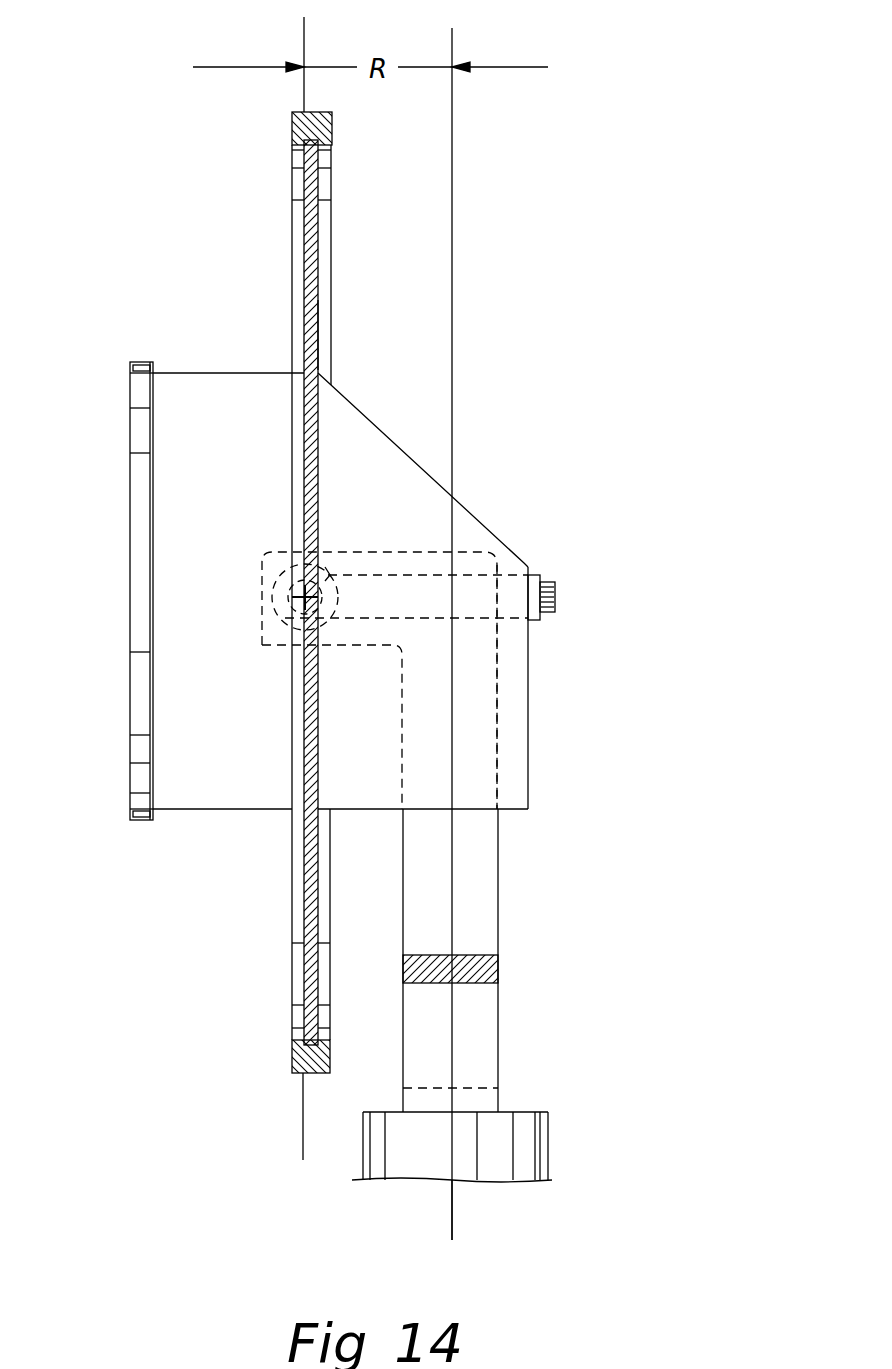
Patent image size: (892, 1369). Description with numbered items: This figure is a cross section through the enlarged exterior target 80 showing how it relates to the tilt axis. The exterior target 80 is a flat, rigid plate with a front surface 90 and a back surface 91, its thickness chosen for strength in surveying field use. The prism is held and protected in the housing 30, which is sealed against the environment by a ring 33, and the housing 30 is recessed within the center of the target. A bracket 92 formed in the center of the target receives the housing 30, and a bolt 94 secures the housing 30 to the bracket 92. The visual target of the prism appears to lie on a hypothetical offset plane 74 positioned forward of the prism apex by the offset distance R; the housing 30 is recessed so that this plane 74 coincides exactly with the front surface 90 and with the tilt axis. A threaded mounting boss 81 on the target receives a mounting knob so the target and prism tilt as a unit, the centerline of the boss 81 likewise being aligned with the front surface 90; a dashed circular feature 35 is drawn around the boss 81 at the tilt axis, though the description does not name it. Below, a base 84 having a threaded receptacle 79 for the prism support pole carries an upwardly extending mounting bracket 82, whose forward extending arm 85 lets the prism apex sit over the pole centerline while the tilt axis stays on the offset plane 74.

The hypothetical offset plane 74 is at (308, 40).
The exterior target 80 is at (318, 218).
The front surface 90 is at (306, 252).
The back surface 91 is at (318, 337).
The housing 30 is at (247, 387).
The ring 33 is at (152, 362).
The forward extending arm 85 is at (418, 552).
The bracket 92 is at (507, 578).
The mounting boss 81 is at (326, 565).
The aperture 35 is at (265, 647).
The bolt 94 is at (556, 612).
The mounting bracket 82 is at (498, 1035).
The base 84 is at (520, 1160).
The threaded receptacle 79 is at (492, 1188).